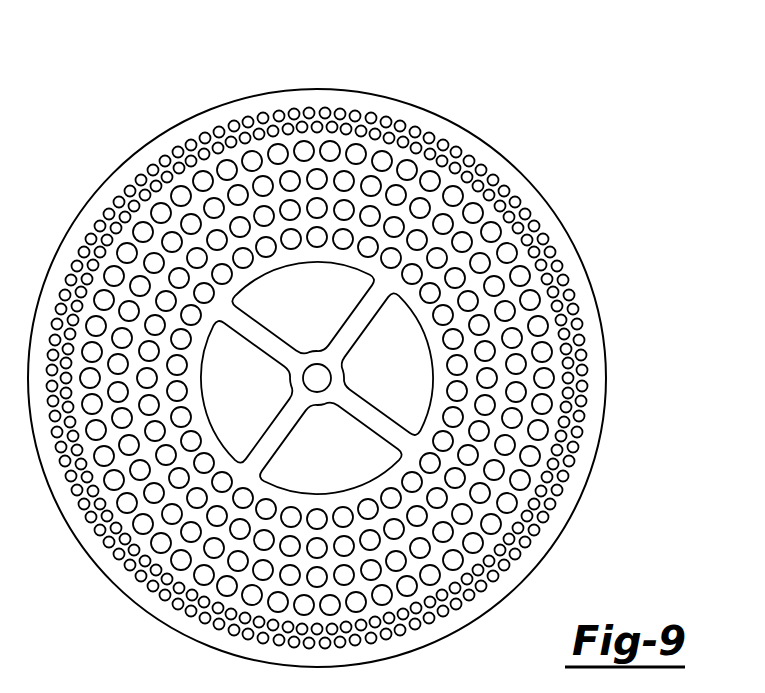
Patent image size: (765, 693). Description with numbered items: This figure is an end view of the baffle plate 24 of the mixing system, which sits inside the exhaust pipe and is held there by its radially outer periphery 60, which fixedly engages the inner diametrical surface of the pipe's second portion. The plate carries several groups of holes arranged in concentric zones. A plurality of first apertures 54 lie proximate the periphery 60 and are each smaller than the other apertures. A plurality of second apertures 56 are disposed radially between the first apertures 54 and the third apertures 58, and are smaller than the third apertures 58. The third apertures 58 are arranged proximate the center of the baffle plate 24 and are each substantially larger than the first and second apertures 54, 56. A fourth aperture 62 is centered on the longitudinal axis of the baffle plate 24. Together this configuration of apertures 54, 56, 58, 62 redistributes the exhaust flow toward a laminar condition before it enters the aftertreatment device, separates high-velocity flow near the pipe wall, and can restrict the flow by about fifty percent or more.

The baffle plate 24 is at (521, 101).
The first apertures 54 is at (490, 174).
The second apertures 56 is at (508, 313).
The third apertures 58 is at (368, 337).
The radially outer periphery 60 is at (351, 90).
The fourth aperture 62 is at (320, 385).